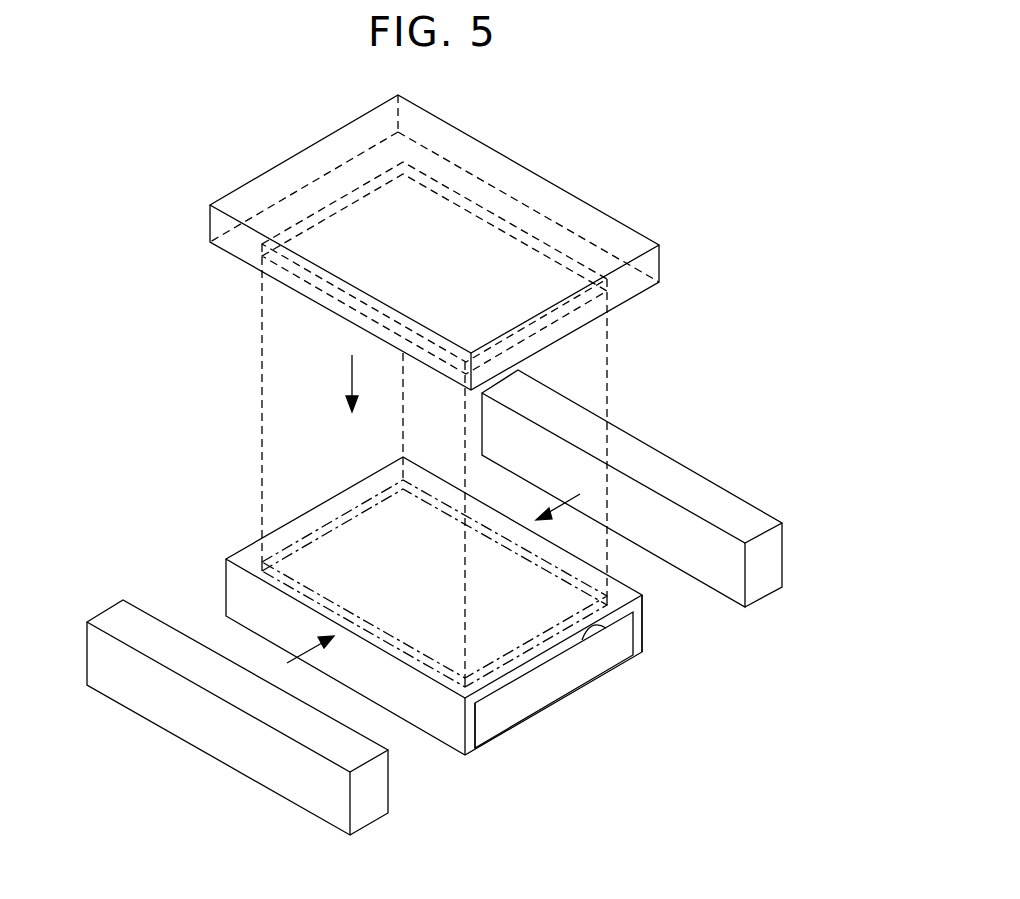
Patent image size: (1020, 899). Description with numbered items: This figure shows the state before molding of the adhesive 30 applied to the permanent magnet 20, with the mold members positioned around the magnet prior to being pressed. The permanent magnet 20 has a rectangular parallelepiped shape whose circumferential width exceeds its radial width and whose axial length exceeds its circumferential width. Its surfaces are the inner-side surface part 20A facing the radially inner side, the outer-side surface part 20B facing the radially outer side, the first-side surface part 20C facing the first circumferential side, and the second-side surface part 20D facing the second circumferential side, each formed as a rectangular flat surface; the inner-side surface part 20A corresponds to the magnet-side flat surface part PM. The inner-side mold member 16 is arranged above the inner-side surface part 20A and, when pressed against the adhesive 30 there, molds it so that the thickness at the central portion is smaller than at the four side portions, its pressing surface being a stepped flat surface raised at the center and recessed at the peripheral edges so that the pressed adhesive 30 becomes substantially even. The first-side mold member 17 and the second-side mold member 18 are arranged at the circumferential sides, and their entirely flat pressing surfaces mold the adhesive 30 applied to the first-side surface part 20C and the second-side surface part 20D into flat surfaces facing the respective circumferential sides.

The inner-side mold member 16 is at (305, 160).
The first-side mold member 17 is at (197, 723).
The second-side mold member 18 is at (673, 477).
The permanent magnet 20 is at (453, 631).
The inner-side surface part 20A is at (600, 625).
The outer-side surface part 20B is at (540, 713).
The first-side surface part 20C is at (477, 725).
The second-side surface part 20D is at (642, 637).
The adhesive 30 is at (243, 597).